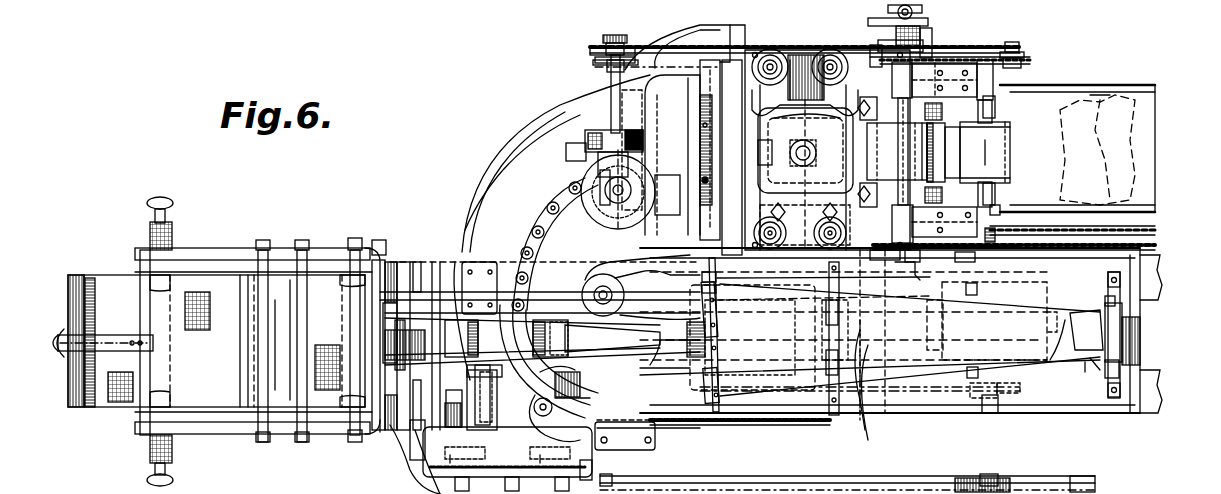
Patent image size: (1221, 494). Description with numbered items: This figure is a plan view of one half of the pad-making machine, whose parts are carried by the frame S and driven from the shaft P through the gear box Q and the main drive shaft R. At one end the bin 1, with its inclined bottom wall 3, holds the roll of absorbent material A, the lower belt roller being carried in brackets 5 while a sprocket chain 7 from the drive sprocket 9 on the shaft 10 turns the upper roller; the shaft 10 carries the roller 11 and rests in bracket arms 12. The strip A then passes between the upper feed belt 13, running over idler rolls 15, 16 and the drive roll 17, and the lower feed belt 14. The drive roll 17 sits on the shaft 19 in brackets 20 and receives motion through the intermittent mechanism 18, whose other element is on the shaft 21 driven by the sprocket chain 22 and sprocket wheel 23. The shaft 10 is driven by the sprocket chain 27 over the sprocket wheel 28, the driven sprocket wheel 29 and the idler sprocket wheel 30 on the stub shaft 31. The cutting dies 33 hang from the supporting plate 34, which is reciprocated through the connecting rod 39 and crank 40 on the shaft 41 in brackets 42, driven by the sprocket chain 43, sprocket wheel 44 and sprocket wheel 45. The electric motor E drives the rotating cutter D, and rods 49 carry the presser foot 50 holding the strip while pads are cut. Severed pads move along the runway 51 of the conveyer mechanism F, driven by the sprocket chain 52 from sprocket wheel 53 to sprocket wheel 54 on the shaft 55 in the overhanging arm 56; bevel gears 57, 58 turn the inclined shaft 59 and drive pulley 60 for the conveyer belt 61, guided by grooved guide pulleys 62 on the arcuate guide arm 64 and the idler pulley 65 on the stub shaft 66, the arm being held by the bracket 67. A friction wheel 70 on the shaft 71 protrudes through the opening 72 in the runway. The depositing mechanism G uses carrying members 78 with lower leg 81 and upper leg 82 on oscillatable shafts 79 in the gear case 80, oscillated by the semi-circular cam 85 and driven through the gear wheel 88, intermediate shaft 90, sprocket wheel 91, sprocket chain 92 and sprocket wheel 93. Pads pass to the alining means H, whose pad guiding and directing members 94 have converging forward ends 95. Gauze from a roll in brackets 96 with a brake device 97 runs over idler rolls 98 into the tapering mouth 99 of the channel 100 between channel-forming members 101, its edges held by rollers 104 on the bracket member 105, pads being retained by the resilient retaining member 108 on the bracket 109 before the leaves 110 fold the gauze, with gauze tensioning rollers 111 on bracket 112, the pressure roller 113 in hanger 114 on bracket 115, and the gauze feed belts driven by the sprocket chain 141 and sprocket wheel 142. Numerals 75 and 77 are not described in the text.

The bin 1 is at (1135, 95).
The inclined bottom wall 3 is at (1100, 100).
The brackets 5 is at (995, 476).
The sprocket chain 7 is at (1074, 245).
The drive sprocket 9 is at (975, 262).
The shaft 10 is at (1000, 200).
The roller 11 is at (1010, 182).
The bracket arms 12 is at (58, 312).
The upper feed belt 13 is at (570, 185).
The lower feed belt 14 is at (1000, 160).
The idler roll 15 is at (922, 152).
The idler roll 16 is at (455, 105).
The drive roll 17 is at (930, 150).
The intermittent mechanism 18 is at (925, 13).
The shaft 19 is at (878, 30).
The brackets 20 is at (905, 152).
The shaft 21 is at (908, 275).
The sprocket chain 22 is at (928, 264).
The sprocket wheel 23 is at (876, 265).
The sprocket chain 27 is at (948, 57).
The sprocket wheel 28 is at (983, 57).
The driven sprocket wheel 29 is at (878, 64).
The idler sprocket wheel 30 is at (1022, 62).
The stub shaft 31 is at (1020, 44).
The cutting dies 33 is at (752, 92).
The supporting plate 34 is at (800, 149).
The connecting rod 39 is at (807, 125).
The crank 40 is at (810, 146).
The shaft 41 is at (810, 298).
The brackets 42 is at (810, 312).
The sprocket chain 43 is at (885, 410).
The sprocket wheel 44 is at (800, 380).
The sprocket wheel 45 is at (1005, 392).
The rods 49 is at (705, 178).
The presser foot 50 is at (700, 100).
The runway 51 is at (560, 125).
The sprocket chain 52 is at (657, 42).
The sprocket wheel 53 is at (932, 38).
The sprocket wheel 54 is at (600, 45).
The shaft 55 is at (618, 35).
The overhanging arm 56 is at (611, 80).
The bevel gear 57 is at (600, 165).
The bevel gear 58 is at (626, 192).
The shaft 59 is at (620, 190).
The drive pulley 60 is at (672, 196).
The conveyer belt 61 is at (545, 215).
The grooved guide pulleys 62 is at (518, 250).
The arcuate guide arm 64 is at (572, 375).
The idler pulley 65 is at (590, 398).
The stub shaft 66 is at (535, 406).
The bracket 67 is at (655, 445).
The friction wheel 70 is at (566, 148).
The shaft 71 is at (671, 150).
The opening 72 is at (600, 132).
The bracket 75 is at (602, 38).
The chain rail 77 is at (605, 35).
The carrying members 78 is at (591, 328).
The oscillatable shafts 79 is at (447, 385).
The gear case 80 is at (412, 440).
The lower leg 81 is at (530, 345).
The upper leg 82 is at (555, 320).
The semi-circular cam 85 is at (410, 465).
The gear wheel 88 is at (580, 477).
The intermediate shaft 90 is at (507, 448).
The sprocket wheel 91 is at (478, 395).
The sprocket chain 92 is at (735, 425).
The sprocket wheel 93 is at (836, 415).
The pad guiding and directing members 94 is at (545, 343).
The forward ends 95 is at (660, 312).
The brackets 96 is at (214, 250).
The brake device 97 is at (84, 407).
The idler rolls 98 is at (272, 303).
The tapering mouth 99 is at (405, 345).
The channel 100 is at (962, 356).
The channel-forming members 101 is at (403, 270).
The rollers 104 is at (395, 338).
The bracket member 105 is at (376, 262).
The resilient retaining member 108 is at (720, 300).
The bracket 109 is at (660, 365).
The leaves 110 is at (883, 404).
The gauze tensioning rollers 111 is at (716, 303).
The supporting bracket 112 is at (820, 282).
The pressure roller 113 is at (1105, 355).
The hanger 114 is at (1105, 300).
The bracket 115 is at (1110, 410).
The sprocket chain 141 is at (1014, 233).
The sprocket wheel 142 is at (966, 233).
The strip of absorbent material A is at (1097, 150).
The rotating cutter D is at (685, 38).
The electric motor E is at (827, 150).
The conveyer mechanism F is at (544, 227).
The depositing mechanism G is at (411, 459).
The alining means H is at (612, 338).
The shaft P is at (1057, 350).
The gear box Q is at (1020, 277).
The main drive shaft R is at (997, 270).
The frame S is at (1150, 413).